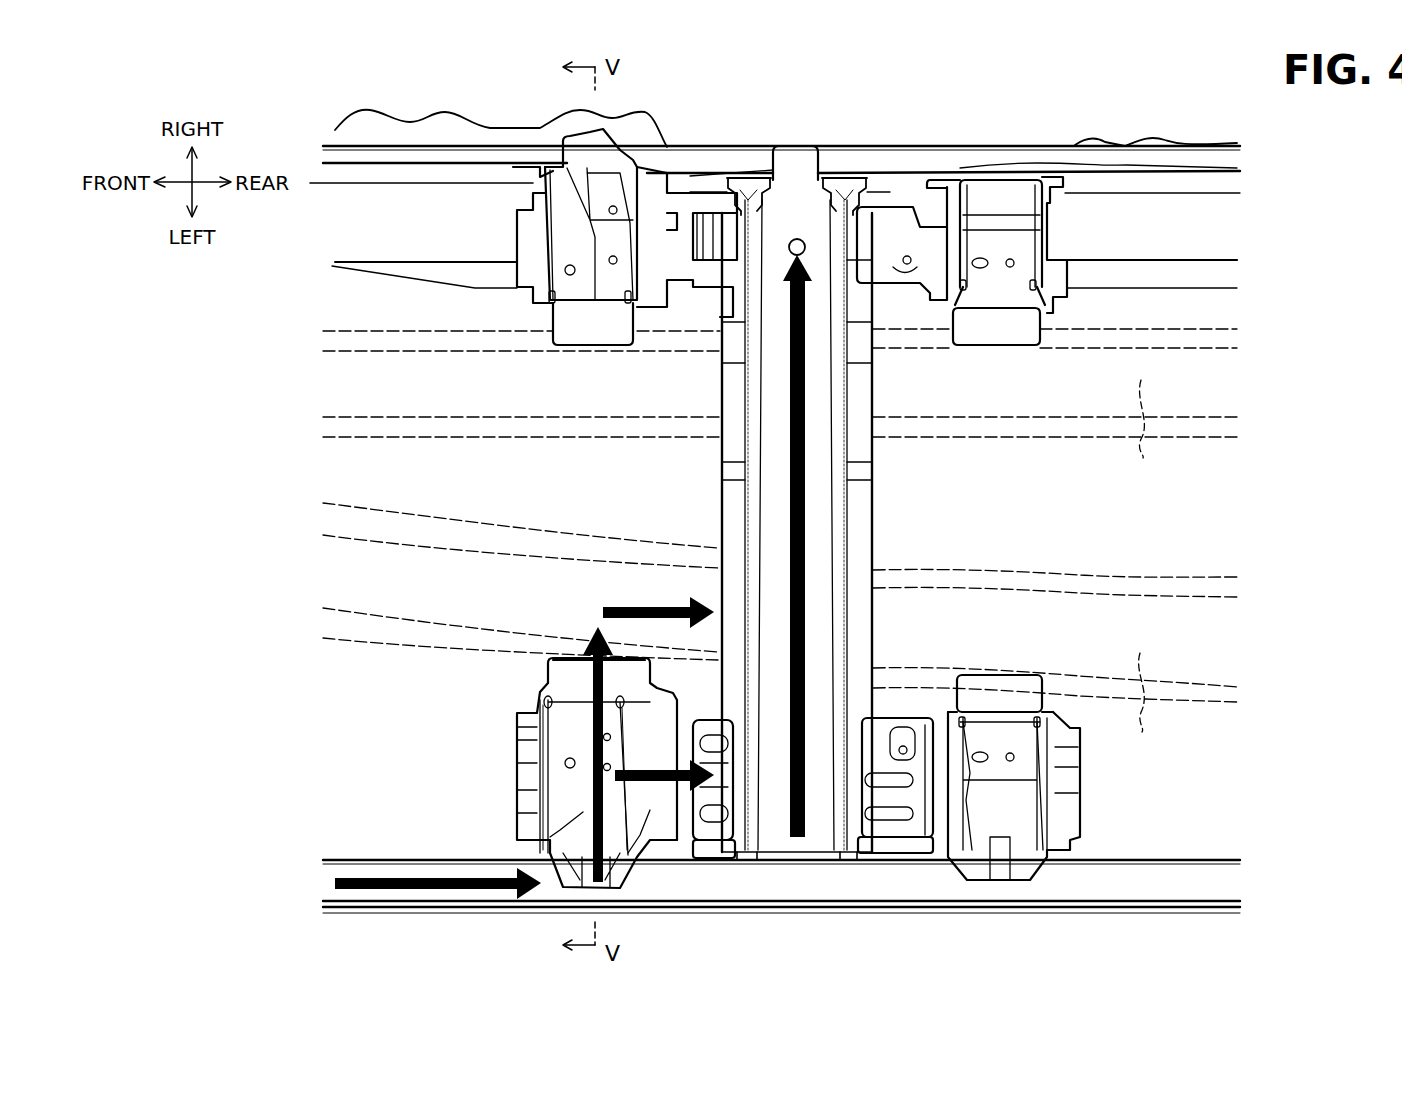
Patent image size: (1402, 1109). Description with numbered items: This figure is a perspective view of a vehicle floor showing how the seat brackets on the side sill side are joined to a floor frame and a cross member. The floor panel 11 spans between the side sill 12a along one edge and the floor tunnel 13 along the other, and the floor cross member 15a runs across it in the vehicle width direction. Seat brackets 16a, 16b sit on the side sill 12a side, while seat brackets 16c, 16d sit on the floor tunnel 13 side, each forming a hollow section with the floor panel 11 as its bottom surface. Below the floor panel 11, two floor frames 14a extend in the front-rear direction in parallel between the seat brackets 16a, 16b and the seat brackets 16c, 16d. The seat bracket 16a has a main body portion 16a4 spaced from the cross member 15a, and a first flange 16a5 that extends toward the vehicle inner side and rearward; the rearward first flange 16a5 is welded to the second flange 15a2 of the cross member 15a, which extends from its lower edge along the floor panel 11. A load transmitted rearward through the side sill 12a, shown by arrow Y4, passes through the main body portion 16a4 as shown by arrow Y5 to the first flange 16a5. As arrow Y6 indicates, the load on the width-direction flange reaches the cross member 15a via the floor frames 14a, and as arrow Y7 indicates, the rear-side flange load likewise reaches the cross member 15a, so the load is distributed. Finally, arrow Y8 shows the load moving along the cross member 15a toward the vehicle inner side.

The floor panel 11 is at (1183, 523).
The side sill 12a is at (823, 888).
The floor tunnel 13 is at (858, 138).
The floor frame 14a is at (1145, 572).
The floor cross member 15a is at (773, 385).
The second flange 15a2 is at (733, 500).
The seat bracket 16a is at (620, 827).
The main body portion 16a4 is at (558, 747).
The first flange 16a5 is at (560, 678).
The seat bracket 16b is at (997, 767).
The seat bracket 16c is at (607, 187).
The seat bracket 16d is at (1000, 195).
The arrow Y4 is at (395, 873).
The arrow Y5 is at (590, 788).
The arrow Y6 is at (643, 603).
The arrow Y7 is at (680, 795).
The arrow Y8 is at (807, 617).